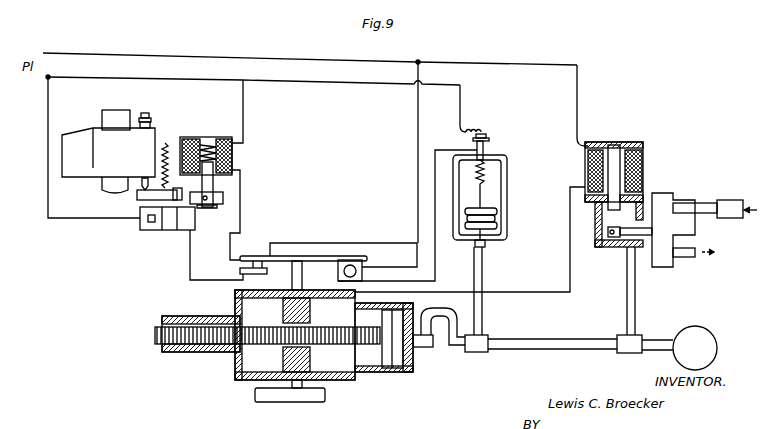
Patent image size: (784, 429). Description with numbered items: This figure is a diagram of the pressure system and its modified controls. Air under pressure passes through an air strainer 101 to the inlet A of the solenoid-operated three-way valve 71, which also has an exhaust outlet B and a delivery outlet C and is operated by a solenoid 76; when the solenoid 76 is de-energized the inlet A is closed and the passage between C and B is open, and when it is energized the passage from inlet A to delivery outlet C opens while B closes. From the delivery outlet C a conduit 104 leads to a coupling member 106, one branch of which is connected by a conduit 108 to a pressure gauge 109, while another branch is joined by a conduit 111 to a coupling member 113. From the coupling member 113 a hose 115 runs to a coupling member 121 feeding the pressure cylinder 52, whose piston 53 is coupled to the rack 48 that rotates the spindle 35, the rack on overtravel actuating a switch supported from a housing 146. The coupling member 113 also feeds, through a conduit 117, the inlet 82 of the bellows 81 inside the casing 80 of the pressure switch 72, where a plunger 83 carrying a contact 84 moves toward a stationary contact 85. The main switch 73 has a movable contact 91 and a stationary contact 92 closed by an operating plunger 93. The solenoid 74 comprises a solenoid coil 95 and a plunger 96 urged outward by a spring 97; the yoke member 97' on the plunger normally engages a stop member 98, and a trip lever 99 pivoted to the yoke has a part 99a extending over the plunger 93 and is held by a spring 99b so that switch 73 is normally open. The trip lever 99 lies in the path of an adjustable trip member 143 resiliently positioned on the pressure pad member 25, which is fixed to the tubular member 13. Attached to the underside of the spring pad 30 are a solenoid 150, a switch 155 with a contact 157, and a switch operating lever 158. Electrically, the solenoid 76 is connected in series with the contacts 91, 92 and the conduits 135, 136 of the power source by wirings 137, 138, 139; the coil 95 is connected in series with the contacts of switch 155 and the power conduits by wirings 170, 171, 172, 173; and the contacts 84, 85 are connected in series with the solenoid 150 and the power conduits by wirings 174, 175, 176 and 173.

The conduit of power source 136 is at (222, 53).
The electrical connecting member 139 is at (577, 90).
The conduit of power source 135 is at (193, 80).
The electrical connecting member 138 is at (72, 218).
The electrical connecting member 170 is at (243, 105).
The electrical connecting member 174 is at (460, 100).
The stationary electrical contact 85 is at (486, 133).
The electrical contact 84 is at (485, 149).
The pressure switch 72 is at (500, 195).
The plunger member 83 is at (484, 188).
The casing 80 is at (498, 211).
The bellows member 81 is at (497, 223).
The inlet 82 is at (485, 243).
The conduit 117 is at (483, 277).
The electrical connecting member 175 is at (435, 265).
The electrical connecting member 137 is at (540, 293).
The electrical connecting member 173 is at (417, 155).
The electrical connecting member 172 is at (350, 243).
The electrical connecting member 176 is at (385, 266).
The spring pad 30 is at (300, 254).
The solenoid 150 is at (337, 270).
The switch operating lever 158 is at (254, 260).
The switch 155 is at (262, 271).
The contact 157 is at (243, 280).
The electrical connecting member 171 is at (232, 236).
The solenoid 74 is at (233, 160).
The solenoid coil 95 is at (191, 138).
The spring 97 is at (218, 143).
The solenoid plunger 96 is at (214, 180).
The yoke member 97' is at (229, 193).
The stop member 98 is at (217, 207).
The trip lever 99 is at (142, 199).
The part of trip lever 99a is at (186, 208).
The spring 99b is at (165, 143).
The adjustable trip member 143 is at (144, 180).
The top pressure pad member 25 is at (77, 133).
The tubular rod 13 is at (113, 110).
The main switch 73 is at (176, 223).
The stationary contact 92 is at (150, 224).
The movable contact 91 is at (160, 228).
The operating plunger 93 is at (186, 232).
The spindle 35 is at (303, 318).
The pressure cylinder 52 is at (368, 373).
The piston 53 is at (396, 370).
The rack 48 is at (216, 345).
The housing 146 is at (170, 352).
The coupling member 121 is at (430, 347).
The conduit or hose 115 is at (445, 310).
The coupling member 113 is at (477, 352).
The conduit 111 is at (560, 350).
The coupling member 106 is at (627, 354).
The conduit 104 is at (636, 290).
The conduit 108 is at (652, 340).
The pressure gauge 109 is at (708, 334).
The solenoid 76 is at (643, 152).
The delivery outlet C is at (625, 254).
The solenoid-operated three-way valve 71 is at (696, 229).
The inlet A is at (678, 203).
The exhaust outlet B is at (705, 262).
The air strainer 101 is at (727, 200).